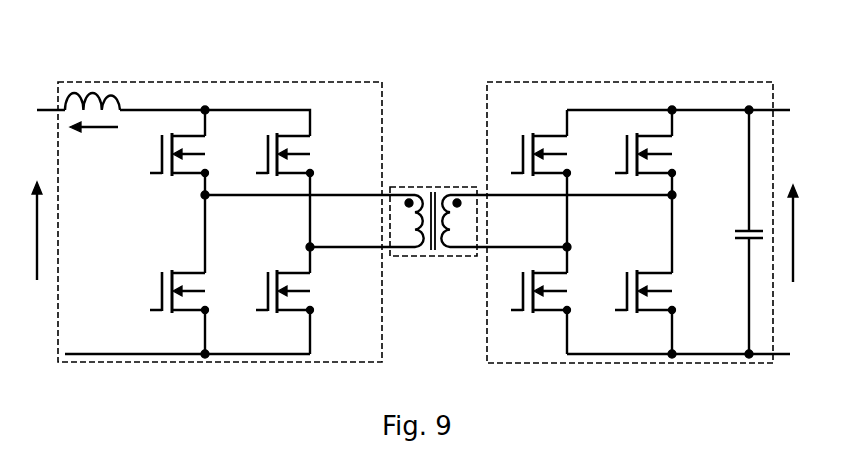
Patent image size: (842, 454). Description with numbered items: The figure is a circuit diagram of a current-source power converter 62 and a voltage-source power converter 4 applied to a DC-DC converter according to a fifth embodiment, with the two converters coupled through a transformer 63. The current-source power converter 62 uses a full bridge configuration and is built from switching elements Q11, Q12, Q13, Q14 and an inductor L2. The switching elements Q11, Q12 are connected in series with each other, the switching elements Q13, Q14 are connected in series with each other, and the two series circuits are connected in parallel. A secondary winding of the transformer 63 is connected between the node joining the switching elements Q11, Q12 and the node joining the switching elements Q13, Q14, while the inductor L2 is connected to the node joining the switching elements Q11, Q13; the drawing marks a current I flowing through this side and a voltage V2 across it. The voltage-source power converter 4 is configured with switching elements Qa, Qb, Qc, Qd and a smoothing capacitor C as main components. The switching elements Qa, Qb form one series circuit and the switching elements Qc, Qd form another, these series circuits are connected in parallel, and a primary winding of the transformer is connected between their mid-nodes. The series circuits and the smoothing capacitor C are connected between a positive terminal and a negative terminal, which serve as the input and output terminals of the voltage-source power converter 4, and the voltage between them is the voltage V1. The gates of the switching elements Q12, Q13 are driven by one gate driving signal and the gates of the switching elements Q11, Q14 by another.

The current-source power converter 62 is at (245, 82).
The transformer 63 is at (437, 186).
The voltage-source power converter 4 is at (716, 82).
The inductor L2 is at (100, 86).
The smoothing capacitor C is at (745, 228).
The current I is at (100, 128).
The voltage V1 is at (806, 233).
The voltage V2 is at (24, 231).
The switching element Q11 is at (162, 157).
The switching element Q12 is at (162, 284).
The switching element Q13 is at (268, 147).
The switching element Q14 is at (268, 284).
The switching element Qa is at (523, 147).
The switching element Qb is at (523, 287).
The switching element Qc is at (627, 147).
The switching element Qd is at (627, 287).